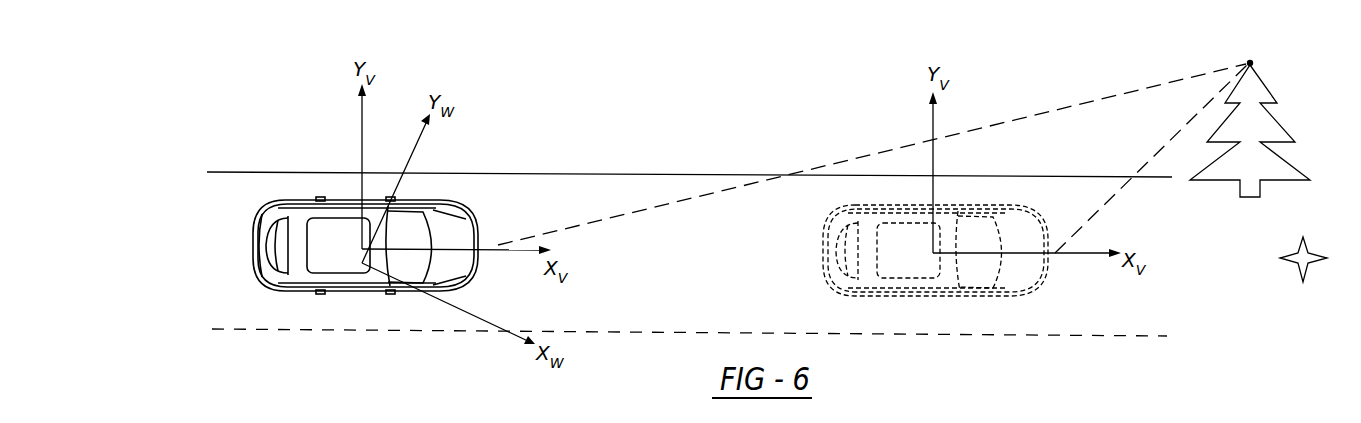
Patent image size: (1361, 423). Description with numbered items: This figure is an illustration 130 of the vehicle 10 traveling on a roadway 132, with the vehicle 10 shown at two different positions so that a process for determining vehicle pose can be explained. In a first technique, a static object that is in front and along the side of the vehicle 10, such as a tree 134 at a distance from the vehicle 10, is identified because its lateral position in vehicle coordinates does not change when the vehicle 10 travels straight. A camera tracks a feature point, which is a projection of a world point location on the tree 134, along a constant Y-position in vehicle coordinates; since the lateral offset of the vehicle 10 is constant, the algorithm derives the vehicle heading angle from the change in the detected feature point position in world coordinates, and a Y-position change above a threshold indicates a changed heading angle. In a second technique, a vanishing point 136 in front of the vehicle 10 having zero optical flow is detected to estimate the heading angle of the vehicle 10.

The vehicle 10 is at (318, 297).
The illustration 130 is at (989, 42).
The roadway 132 is at (236, 177).
The tree 134 is at (1270, 88).
The vanishing point 136 is at (1291, 264).